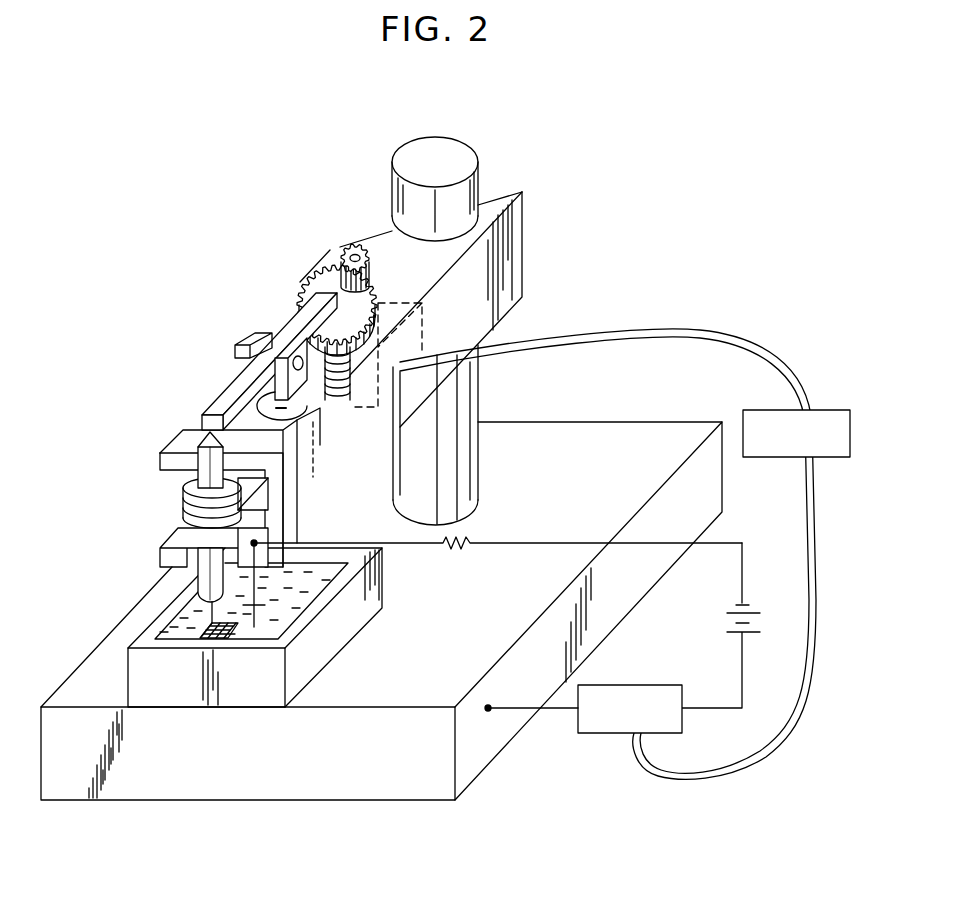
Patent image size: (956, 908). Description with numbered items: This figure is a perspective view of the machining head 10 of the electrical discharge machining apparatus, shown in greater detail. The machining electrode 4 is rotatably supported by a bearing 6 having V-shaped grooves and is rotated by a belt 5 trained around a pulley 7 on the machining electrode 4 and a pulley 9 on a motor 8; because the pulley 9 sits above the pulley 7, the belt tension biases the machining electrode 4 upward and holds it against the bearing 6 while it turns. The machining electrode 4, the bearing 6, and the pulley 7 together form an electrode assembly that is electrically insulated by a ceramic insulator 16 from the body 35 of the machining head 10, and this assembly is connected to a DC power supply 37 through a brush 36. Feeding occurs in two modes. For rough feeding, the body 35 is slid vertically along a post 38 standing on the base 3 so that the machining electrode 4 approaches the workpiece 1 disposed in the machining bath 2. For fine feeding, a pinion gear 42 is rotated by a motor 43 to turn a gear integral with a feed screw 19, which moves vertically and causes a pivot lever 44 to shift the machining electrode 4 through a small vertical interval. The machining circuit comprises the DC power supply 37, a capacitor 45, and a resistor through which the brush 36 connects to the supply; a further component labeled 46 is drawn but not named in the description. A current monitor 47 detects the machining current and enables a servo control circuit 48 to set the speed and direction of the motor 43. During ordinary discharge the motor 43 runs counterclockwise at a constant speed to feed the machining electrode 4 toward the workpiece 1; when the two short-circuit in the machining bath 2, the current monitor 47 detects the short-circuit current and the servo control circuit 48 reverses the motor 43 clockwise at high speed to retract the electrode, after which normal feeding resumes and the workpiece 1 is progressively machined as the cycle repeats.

The workpiece 1 is at (210, 638).
The machining bath 2 is at (245, 692).
The base 3 is at (592, 437).
The machining electrode 4 is at (205, 486).
The belt 5 is at (250, 492).
The bearing 6 is at (160, 460).
The pulley 7 is at (190, 502).
The motor 8 is at (300, 456).
The pulley 9 is at (297, 428).
The machining head 10 is at (372, 233).
The insulator 16 is at (298, 502).
The feed screw 19 is at (297, 301).
The body 35 is at (512, 262).
The brush 36 is at (262, 552).
The DC power supply 37 is at (733, 621).
The post 38 is at (448, 155).
The pinion gear 42 is at (342, 248).
The motor 43 is at (410, 352).
The pivot lever 44 is at (228, 397).
The capacitor 45 is at (262, 617).
The wire 46 is at (498, 575).
The current monitor 47 is at (685, 697).
The servo control circuit 48 is at (750, 410).